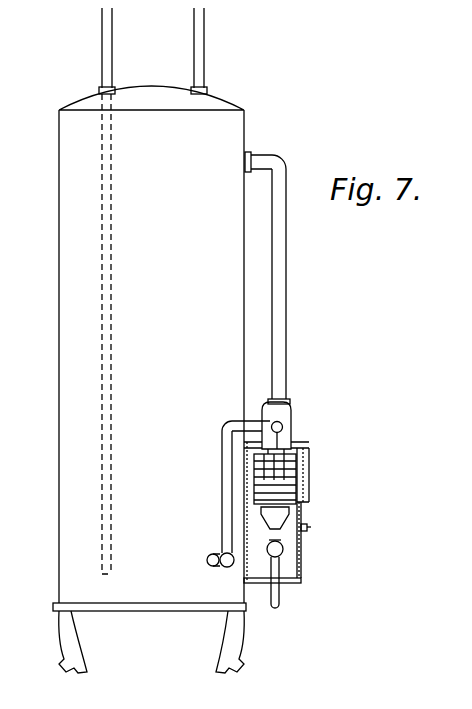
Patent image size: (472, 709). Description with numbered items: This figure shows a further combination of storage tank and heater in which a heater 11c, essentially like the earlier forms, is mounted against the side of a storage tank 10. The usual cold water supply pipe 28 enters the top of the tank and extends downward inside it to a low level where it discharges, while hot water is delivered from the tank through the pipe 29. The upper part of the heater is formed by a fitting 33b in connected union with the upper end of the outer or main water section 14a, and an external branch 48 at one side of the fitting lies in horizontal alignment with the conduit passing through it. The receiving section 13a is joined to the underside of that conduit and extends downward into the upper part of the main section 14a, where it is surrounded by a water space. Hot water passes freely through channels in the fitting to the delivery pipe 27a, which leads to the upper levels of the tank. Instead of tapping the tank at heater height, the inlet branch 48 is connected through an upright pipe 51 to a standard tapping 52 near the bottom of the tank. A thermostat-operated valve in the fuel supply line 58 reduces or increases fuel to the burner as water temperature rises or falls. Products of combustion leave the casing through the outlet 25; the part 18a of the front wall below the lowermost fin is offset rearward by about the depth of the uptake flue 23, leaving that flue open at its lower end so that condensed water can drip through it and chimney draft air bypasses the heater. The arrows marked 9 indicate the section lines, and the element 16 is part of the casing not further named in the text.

The storage tank 10 is at (68, 296).
The cold water supply pipe 28 is at (103, 29).
The hot water delivery pipe 29 is at (193, 36).
The delivery pipe 27a is at (271, 249).
The flow direction arrow 9 is at (252, 368).
The fitting 33b is at (281, 408).
The branch 48 is at (273, 417).
The upright pipe 51 is at (215, 448).
The tapping 52 is at (203, 540).
The outlet 25 is at (296, 430).
The receiving section 13a is at (303, 441).
The front wall part 18a is at (290, 563).
The uptake flue 23 is at (294, 451).
The main water section 14a is at (277, 489).
The heater 11c is at (279, 531).
The valve 16 is at (274, 546).
The fuel supply line 58 is at (269, 583).